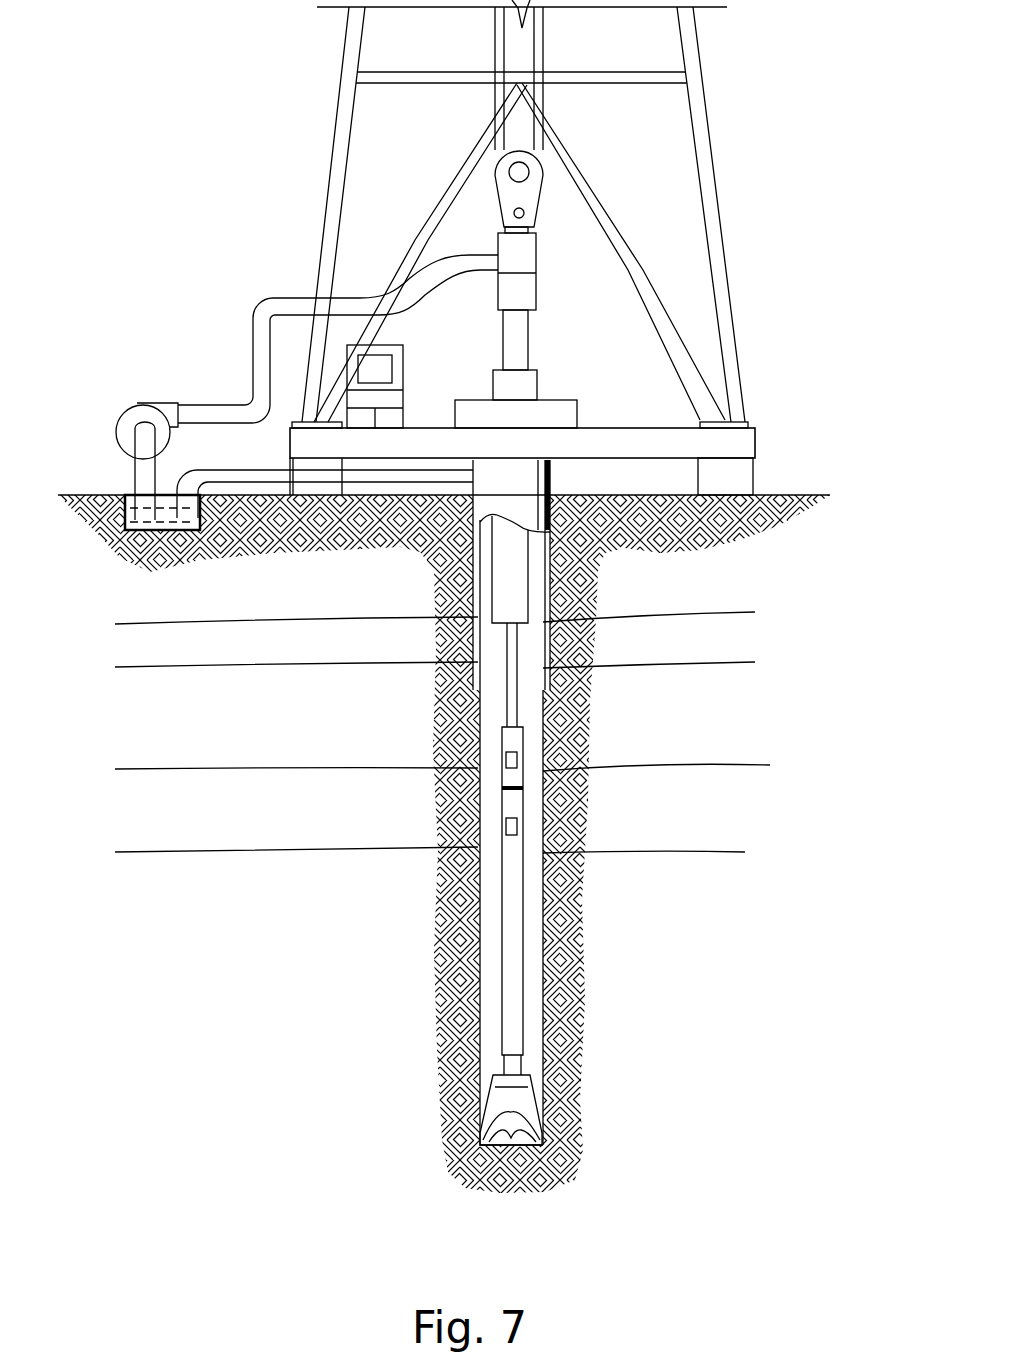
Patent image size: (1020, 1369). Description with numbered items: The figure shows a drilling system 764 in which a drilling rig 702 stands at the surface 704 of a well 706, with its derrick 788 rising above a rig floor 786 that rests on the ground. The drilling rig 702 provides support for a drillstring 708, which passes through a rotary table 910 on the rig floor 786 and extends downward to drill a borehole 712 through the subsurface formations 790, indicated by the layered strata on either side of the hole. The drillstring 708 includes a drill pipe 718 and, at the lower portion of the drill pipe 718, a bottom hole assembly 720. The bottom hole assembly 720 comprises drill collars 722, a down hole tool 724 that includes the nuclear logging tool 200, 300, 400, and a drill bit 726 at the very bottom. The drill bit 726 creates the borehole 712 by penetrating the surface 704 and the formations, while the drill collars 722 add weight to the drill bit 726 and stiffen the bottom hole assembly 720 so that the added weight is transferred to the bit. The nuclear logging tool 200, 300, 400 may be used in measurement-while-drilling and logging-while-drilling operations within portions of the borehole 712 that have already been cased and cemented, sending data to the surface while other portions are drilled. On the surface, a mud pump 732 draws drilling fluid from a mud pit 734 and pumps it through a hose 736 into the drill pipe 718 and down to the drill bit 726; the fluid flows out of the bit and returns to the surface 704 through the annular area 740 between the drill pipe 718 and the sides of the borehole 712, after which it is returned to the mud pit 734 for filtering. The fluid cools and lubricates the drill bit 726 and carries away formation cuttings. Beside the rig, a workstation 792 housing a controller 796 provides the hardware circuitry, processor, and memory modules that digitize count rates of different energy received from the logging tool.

The drilling system 764 is at (203, 105).
The derrick 788 is at (702, 100).
The drilling rig 702 is at (723, 207).
The rig floor 786 is at (753, 437).
The surface 704 is at (777, 495).
The well 706 is at (560, 492).
The hose 736 is at (263, 300).
The mud pump 732 is at (153, 400).
The mud pit 734 is at (147, 527).
The workstation 792 is at (414, 367).
The controller 796 is at (392, 370).
The rotary table 910 is at (480, 398).
The drill collars 722 is at (528, 583).
The drill pipe 718 is at (512, 663).
The annular area 740 is at (646, 763).
The nuclear logging tool 200 is at (648, 814).
The nuclear logging tool 300 is at (648, 814).
The nuclear logging tool 400 is at (517, 823).
The drillstring 708 is at (525, 918).
The borehole 712 is at (545, 1000).
The down hole tool 724 is at (512, 1035).
The drill bit 726 is at (518, 1098).
The bottom hole assembly 720 is at (433, 687).
The subsurface formations 790 is at (97, 620).